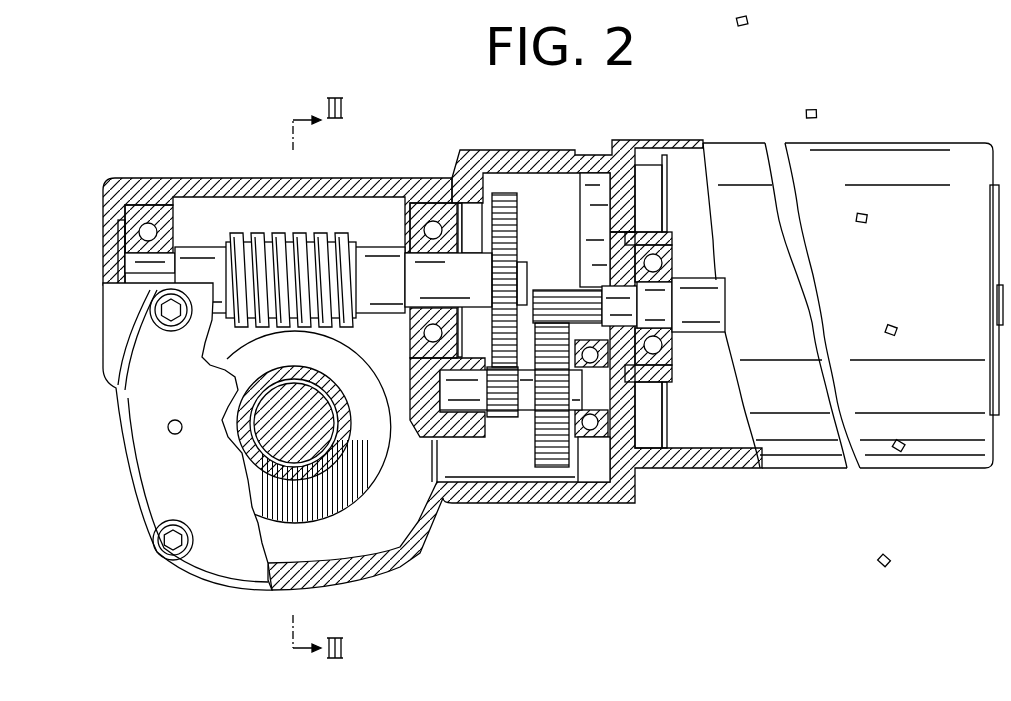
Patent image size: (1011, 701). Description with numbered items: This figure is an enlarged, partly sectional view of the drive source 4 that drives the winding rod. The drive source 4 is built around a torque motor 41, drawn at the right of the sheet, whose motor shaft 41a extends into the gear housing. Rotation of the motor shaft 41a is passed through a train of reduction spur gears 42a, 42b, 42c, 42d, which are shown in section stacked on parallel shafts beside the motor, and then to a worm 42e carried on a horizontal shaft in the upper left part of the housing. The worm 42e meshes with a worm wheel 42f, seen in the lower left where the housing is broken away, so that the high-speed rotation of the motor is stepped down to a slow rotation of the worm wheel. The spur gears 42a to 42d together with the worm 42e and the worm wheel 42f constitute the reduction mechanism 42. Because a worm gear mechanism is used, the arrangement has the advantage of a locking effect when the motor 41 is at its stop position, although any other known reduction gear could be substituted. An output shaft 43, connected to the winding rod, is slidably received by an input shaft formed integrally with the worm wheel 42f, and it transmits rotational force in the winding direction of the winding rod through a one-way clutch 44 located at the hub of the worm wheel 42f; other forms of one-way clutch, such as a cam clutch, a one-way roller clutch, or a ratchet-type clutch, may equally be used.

The drive source 4 is at (527, 563).
The torque motor 41 is at (900, 145).
The motor shaft 41a is at (704, 335).
The reduction mechanism 42 is at (374, 217).
The reduction spur gear 42a is at (563, 288).
The reduction spur gear 42b is at (533, 457).
The reduction spur gear 42c is at (502, 418).
The reduction spur gear 42d is at (518, 217).
The worm 42e is at (277, 235).
The worm wheel 42f is at (325, 373).
The output shaft 43 is at (263, 445).
The one-way clutch 44 is at (326, 408).